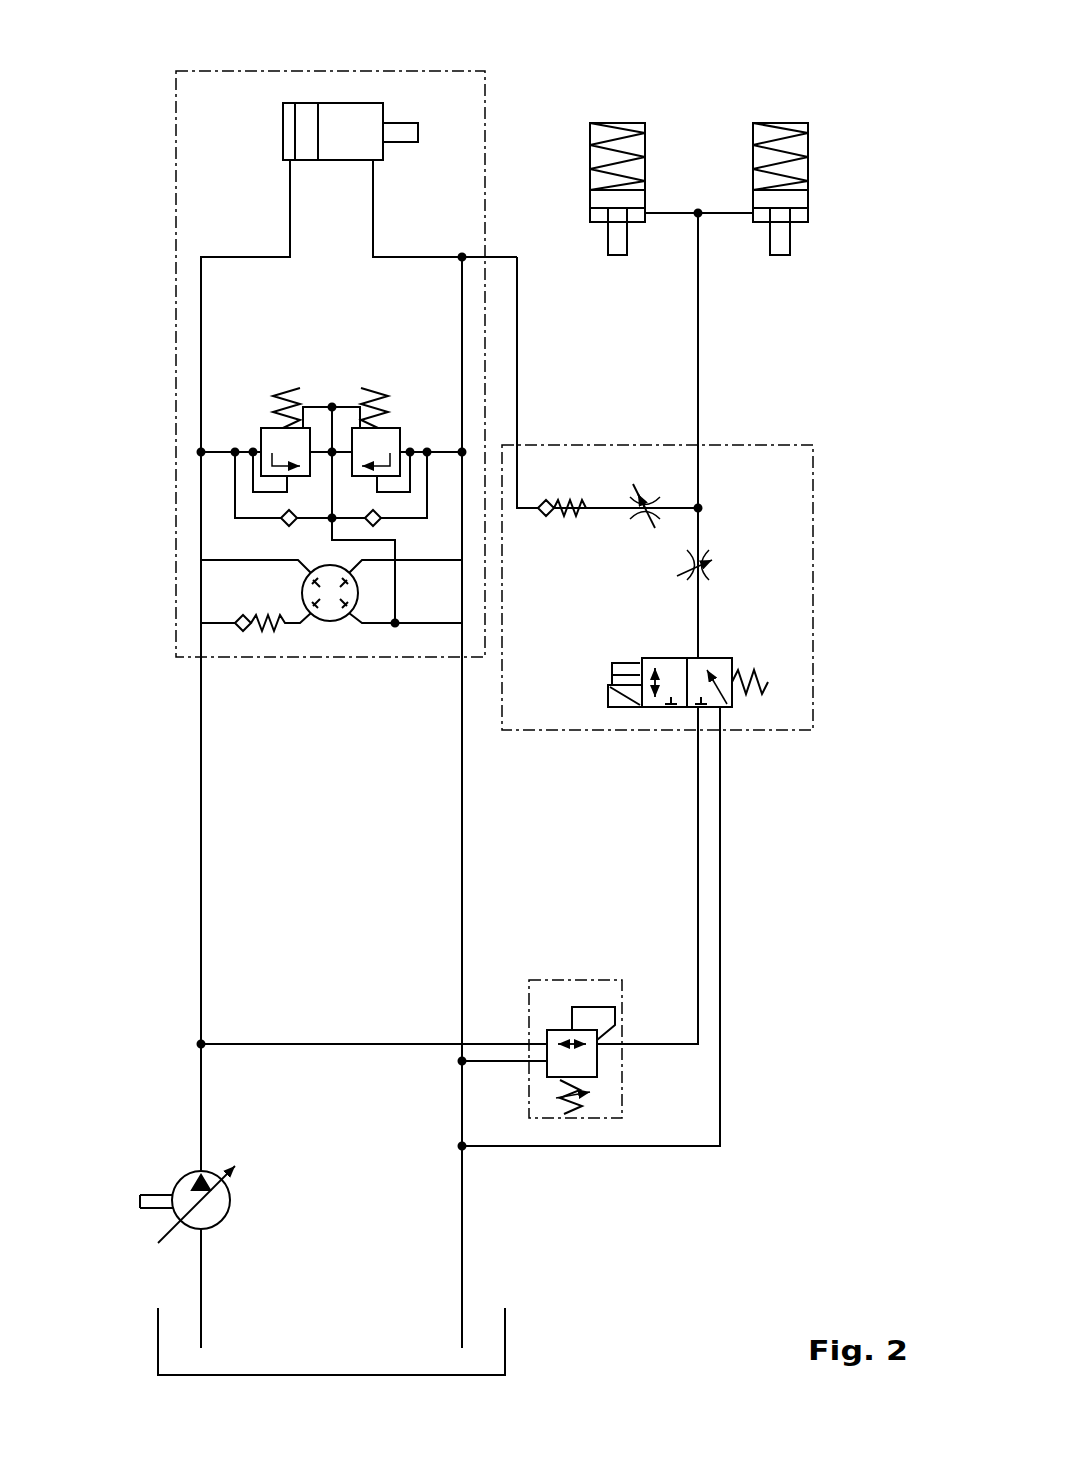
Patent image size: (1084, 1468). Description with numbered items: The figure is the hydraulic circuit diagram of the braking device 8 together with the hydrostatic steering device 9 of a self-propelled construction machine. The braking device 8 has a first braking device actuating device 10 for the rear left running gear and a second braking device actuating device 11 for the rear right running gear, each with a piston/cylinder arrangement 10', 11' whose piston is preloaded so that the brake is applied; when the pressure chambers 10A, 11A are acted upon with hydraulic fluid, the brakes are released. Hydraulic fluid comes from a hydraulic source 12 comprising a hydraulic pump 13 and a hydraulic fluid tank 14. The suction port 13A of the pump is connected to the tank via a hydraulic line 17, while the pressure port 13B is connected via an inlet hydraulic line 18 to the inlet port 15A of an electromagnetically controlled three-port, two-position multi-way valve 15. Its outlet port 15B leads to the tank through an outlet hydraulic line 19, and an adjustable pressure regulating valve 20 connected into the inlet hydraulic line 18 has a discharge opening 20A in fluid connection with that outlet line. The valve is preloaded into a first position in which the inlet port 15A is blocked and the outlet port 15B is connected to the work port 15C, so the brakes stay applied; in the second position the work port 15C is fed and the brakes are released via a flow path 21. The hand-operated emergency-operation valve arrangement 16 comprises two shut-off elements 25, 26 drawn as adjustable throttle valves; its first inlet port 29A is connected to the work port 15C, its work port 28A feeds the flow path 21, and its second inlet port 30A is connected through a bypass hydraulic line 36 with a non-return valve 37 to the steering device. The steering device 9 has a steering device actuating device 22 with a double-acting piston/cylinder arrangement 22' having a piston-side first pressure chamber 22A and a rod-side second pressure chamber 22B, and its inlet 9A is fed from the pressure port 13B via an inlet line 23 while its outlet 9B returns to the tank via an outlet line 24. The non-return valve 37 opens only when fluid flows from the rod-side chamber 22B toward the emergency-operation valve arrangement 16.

The braking device 8 is at (788, 435).
The steering device 9 is at (152, 376).
The inlet 9A is at (200, 657).
The outlet 9B is at (461, 657).
The first braking device actuating device 10 is at (640, 122).
The piston/cylinder arrangement 10' is at (665, 156).
The pressure chamber 10A is at (602, 222).
The second braking device actuating device 11 is at (799, 122).
The piston/cylinder arrangement 11' is at (826, 156).
The pressure chamber 11A is at (765, 222).
The hydraulic source 12 is at (283, 1178).
The hydraulic pump 13 is at (170, 1175).
The suction port 13A is at (205, 1230).
The pressure port 13B is at (205, 1172).
The hydraulic fluid tank 14 is at (318, 1374).
The multi-way valve 15 is at (778, 680).
The inlet port 15A is at (698, 710).
The outlet port 15B is at (722, 710).
The work port 15C is at (698, 660).
The emergency-operation valve arrangement 16 is at (655, 468).
The hydraulic line 17 is at (200, 1280).
The inlet hydraulic line 18 is at (487, 1035).
The outlet hydraulic line 19 is at (733, 935).
The adjustable pressure regulating valve 20 is at (578, 978).
The discharge opening 20A is at (546, 1065).
The flow path 21 is at (703, 395).
The steering device actuating device 22 is at (333, 83).
The piston/cylinder arrangement 22' is at (345, 66).
The first pressure chamber 22A is at (292, 135).
The second pressure chamber 22B is at (375, 112).
The inlet line 23 is at (203, 800).
The outlet line 24 is at (465, 800).
The shut-off element 25 is at (728, 570).
The shut-off element 26 is at (635, 522).
The work port 28A is at (703, 520).
The first inlet port 29A is at (703, 612).
The second inlet port 30A is at (612, 506).
The bypass hydraulic line 36 is at (519, 353).
The non-return valve 37 is at (546, 500).